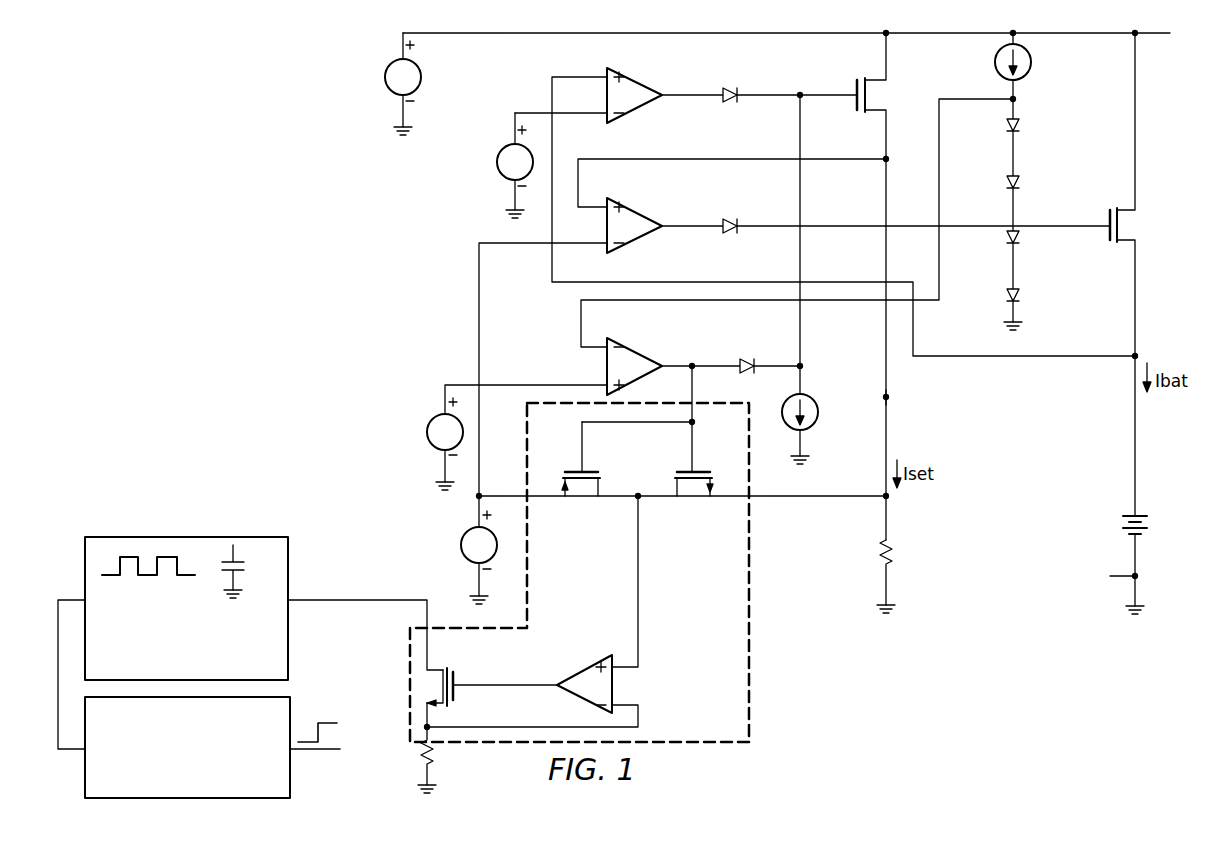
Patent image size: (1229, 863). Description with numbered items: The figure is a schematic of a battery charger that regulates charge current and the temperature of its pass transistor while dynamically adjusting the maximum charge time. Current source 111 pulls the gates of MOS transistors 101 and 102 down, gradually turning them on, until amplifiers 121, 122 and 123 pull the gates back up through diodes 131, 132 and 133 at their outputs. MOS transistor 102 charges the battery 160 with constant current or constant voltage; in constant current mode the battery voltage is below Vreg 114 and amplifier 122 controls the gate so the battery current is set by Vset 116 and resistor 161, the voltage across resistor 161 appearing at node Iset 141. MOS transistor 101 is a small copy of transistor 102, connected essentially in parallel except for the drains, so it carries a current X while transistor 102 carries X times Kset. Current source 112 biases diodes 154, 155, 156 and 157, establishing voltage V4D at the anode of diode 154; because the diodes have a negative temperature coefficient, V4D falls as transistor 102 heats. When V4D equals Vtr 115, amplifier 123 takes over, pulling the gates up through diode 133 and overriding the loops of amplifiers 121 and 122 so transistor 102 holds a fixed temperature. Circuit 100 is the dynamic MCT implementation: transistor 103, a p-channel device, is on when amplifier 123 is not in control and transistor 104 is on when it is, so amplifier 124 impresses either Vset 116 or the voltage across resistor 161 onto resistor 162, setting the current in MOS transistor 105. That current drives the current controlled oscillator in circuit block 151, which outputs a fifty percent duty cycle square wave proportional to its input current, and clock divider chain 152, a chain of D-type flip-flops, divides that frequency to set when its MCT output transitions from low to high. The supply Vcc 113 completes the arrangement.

The dynamic MCT implementation circuit 100 is at (750, 687).
The MOS transistor 101 is at (857, 84).
The MOS transistor 102 is at (1108, 218).
The transistor 103 is at (578, 470).
The transistor 104 is at (706, 470).
The MOS transistor 105 is at (456, 676).
The current source 111 is at (835, 388).
The current source 112 is at (995, 62).
The Vcc 113 is at (387, 74).
The Vreg 114 is at (499, 160).
The Vtr 115 is at (428, 428).
The Vset 116 is at (463, 538).
The amplifier 121 is at (651, 60).
The amplifier 122 is at (651, 190).
The amplifier 123 is at (651, 331).
The amplifier 124 is at (585, 668).
The diode 131 is at (746, 70).
The diode 132 is at (734, 219).
The diode 133 is at (751, 359).
The node Iset 141 is at (888, 400).
The current controlled oscillator 151 is at (288, 565).
The clock divider chain 152 is at (290, 782).
The diode 154 is at (1007, 128).
The diode 155 is at (1007, 185).
The diode 156 is at (1007, 240).
The diode 157 is at (1007, 298).
The battery 160 is at (1130, 518).
The resistor 161 is at (881, 560).
The resistor 162 is at (421, 760).